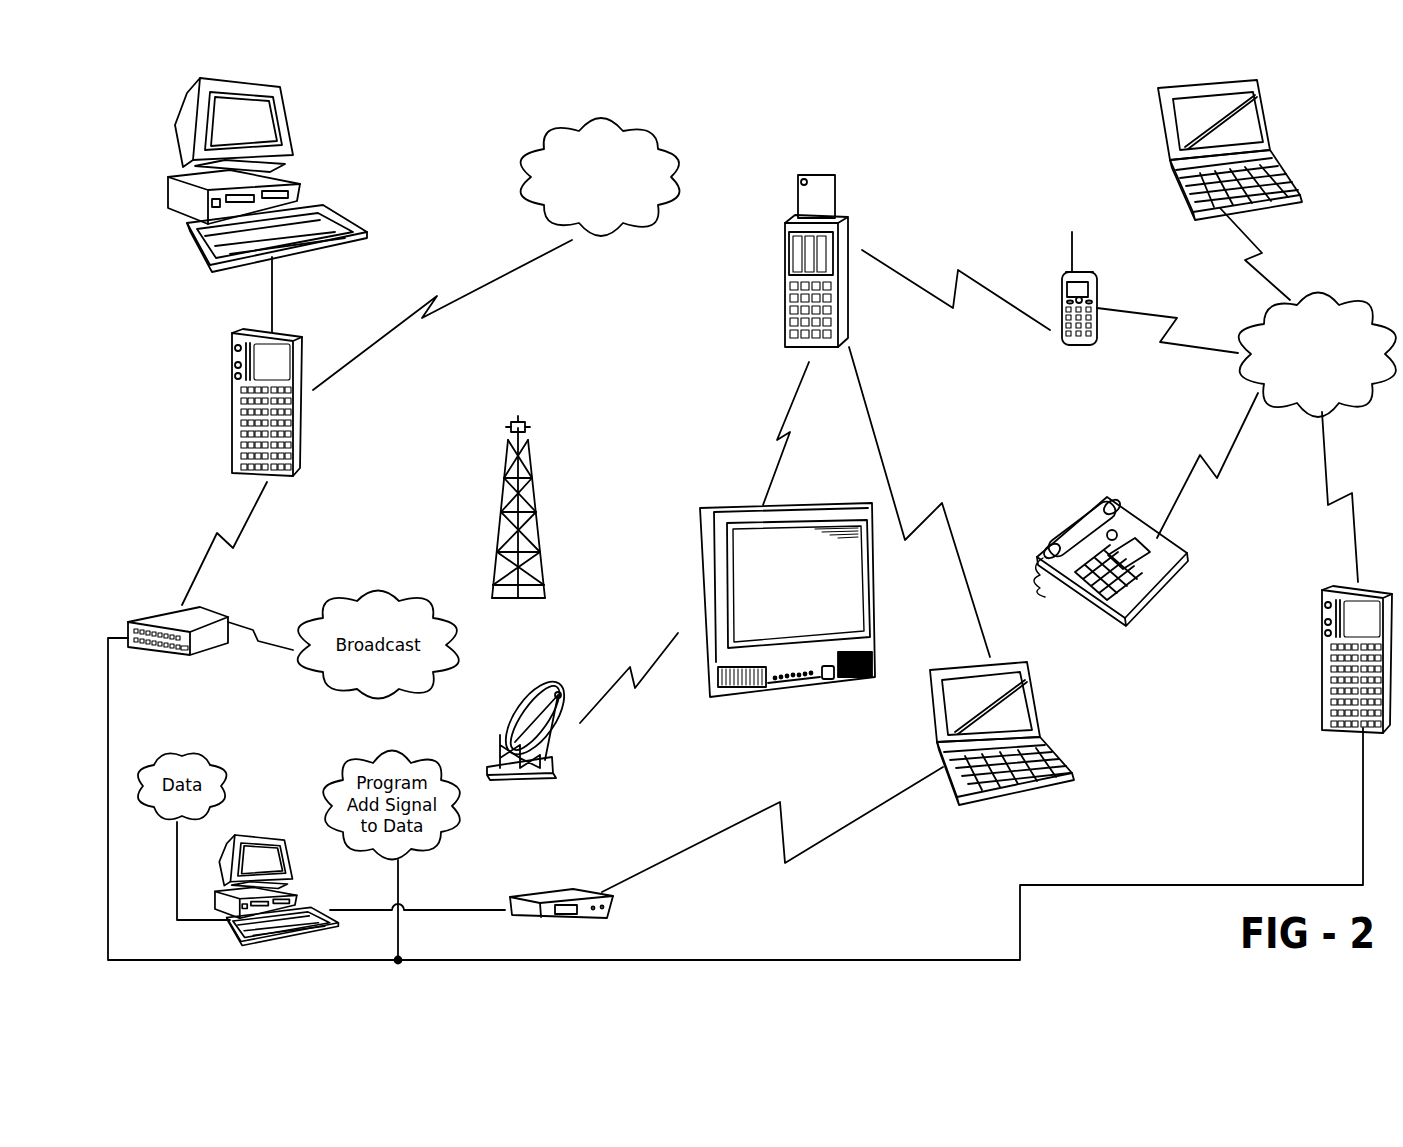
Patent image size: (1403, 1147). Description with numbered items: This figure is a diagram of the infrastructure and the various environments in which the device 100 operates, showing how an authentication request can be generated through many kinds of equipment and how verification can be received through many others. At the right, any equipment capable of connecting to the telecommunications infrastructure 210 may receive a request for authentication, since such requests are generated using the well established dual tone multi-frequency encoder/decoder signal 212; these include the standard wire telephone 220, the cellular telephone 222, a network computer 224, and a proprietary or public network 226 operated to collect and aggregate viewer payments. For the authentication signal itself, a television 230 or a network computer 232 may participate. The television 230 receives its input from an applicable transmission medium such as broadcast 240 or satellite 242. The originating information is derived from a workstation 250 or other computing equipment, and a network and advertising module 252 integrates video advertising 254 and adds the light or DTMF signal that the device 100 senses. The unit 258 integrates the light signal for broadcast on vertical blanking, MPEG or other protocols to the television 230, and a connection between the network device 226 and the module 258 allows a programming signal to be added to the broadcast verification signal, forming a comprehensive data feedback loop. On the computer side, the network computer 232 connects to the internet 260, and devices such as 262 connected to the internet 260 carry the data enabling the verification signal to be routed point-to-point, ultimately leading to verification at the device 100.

The device 100 is at (797, 197).
The telecommunications infrastructure 210 is at (1353, 297).
The dual tone multi-frequency (DTMF) encoder/decoder signal 212 is at (897, 272).
The standard wire telephone 220 is at (1068, 532).
The cellular telephone 222 is at (1060, 313).
The network computer 224 is at (1167, 185).
The proprietary or public network 226 is at (1322, 698).
The television 230 is at (714, 506).
The network computer 232 is at (1003, 783).
The broadcast 240 is at (497, 544).
The satellite 242 is at (550, 765).
The workstation 250 is at (295, 139).
The network and advertising module 252 is at (232, 396).
The video advertising 254 is at (540, 149).
The unit 258 is at (163, 608).
The internet 260 is at (613, 902).
The devices connected to the internet 262 is at (272, 835).